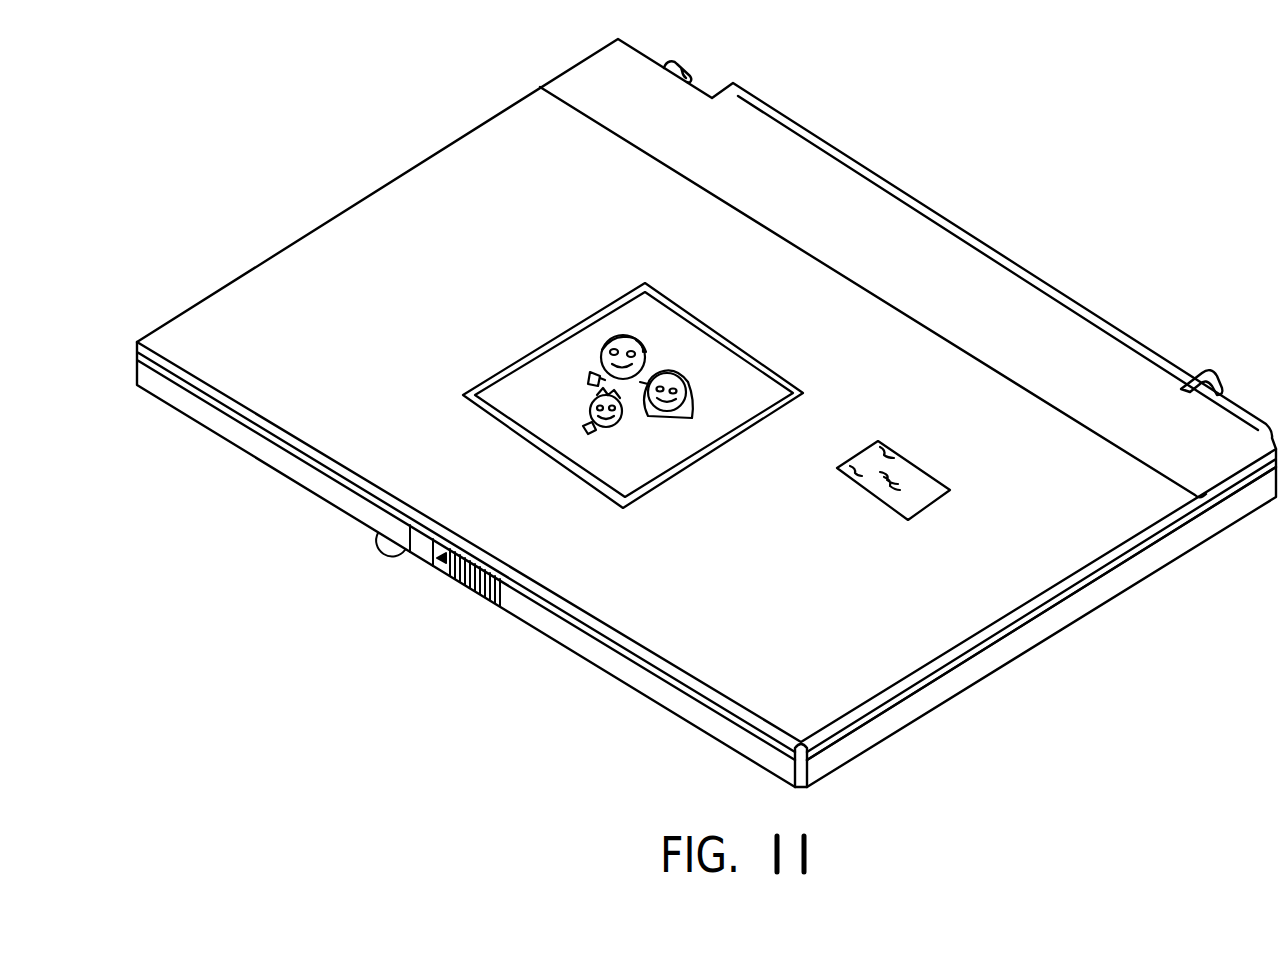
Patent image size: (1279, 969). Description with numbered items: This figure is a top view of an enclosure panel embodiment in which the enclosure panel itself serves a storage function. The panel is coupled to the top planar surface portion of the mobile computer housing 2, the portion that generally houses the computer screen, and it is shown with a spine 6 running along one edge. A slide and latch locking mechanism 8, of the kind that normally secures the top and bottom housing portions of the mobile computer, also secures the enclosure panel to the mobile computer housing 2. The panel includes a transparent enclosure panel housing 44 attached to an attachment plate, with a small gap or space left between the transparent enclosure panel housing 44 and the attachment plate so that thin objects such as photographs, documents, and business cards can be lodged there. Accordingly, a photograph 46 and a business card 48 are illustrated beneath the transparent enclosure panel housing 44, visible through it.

The mobile computer housing 2 is at (1040, 624).
The spine 6 is at (1070, 328).
The slide and latch locking mechanism 8 is at (460, 580).
The transparent enclosure panel housing 44 is at (877, 660).
The photograph 46 is at (793, 378).
The business card 48 is at (934, 502).